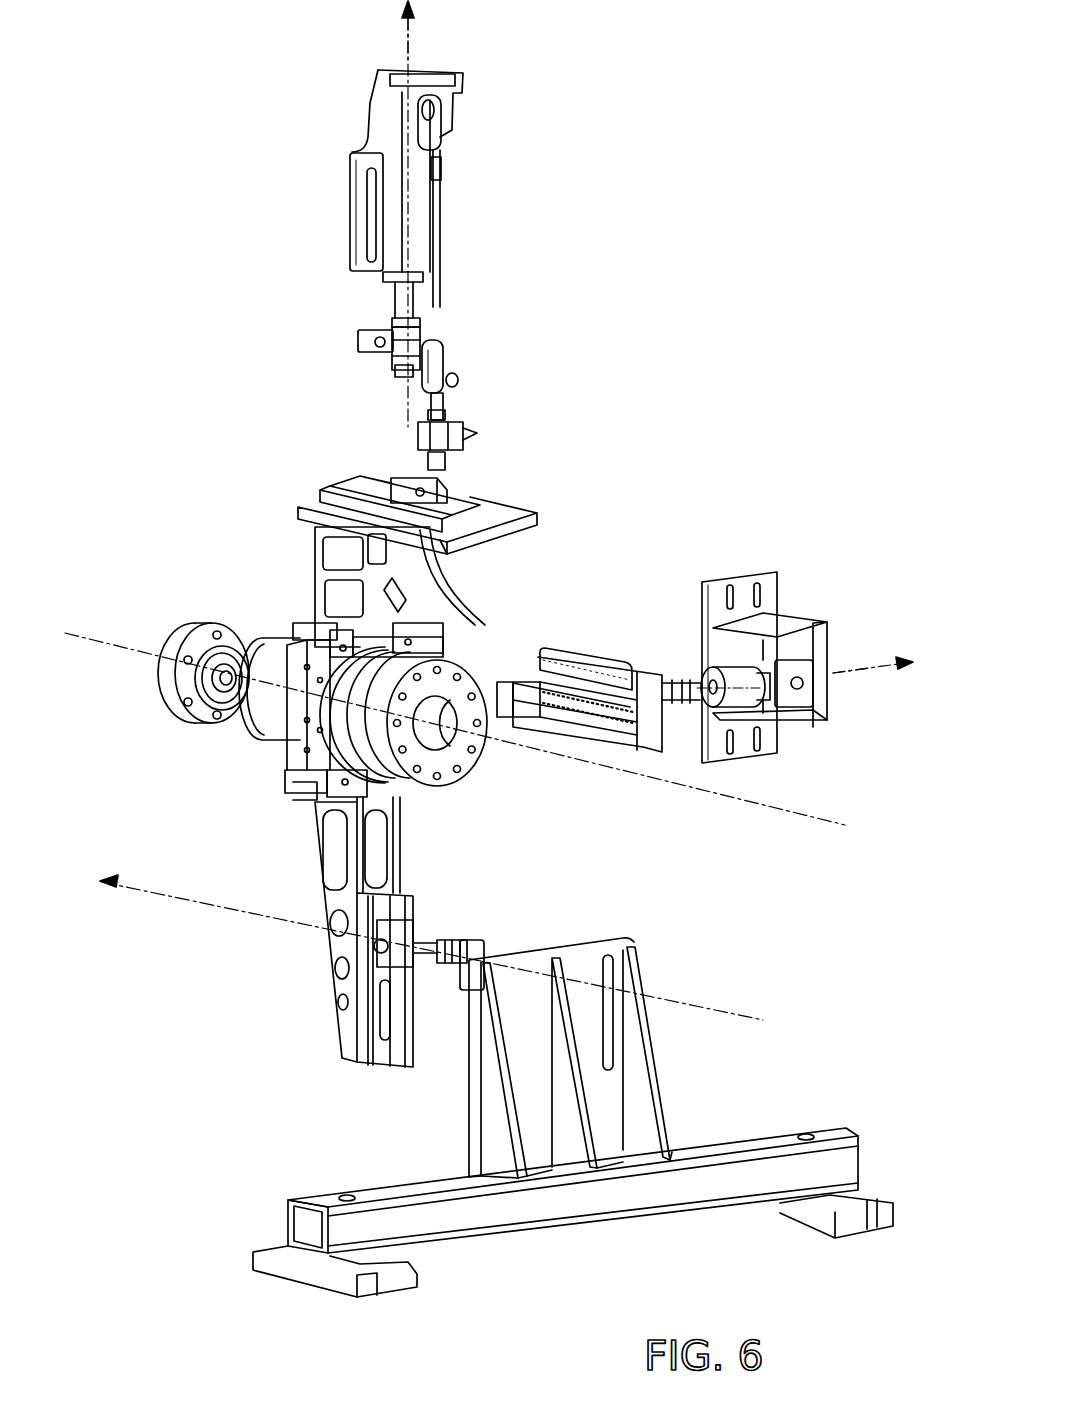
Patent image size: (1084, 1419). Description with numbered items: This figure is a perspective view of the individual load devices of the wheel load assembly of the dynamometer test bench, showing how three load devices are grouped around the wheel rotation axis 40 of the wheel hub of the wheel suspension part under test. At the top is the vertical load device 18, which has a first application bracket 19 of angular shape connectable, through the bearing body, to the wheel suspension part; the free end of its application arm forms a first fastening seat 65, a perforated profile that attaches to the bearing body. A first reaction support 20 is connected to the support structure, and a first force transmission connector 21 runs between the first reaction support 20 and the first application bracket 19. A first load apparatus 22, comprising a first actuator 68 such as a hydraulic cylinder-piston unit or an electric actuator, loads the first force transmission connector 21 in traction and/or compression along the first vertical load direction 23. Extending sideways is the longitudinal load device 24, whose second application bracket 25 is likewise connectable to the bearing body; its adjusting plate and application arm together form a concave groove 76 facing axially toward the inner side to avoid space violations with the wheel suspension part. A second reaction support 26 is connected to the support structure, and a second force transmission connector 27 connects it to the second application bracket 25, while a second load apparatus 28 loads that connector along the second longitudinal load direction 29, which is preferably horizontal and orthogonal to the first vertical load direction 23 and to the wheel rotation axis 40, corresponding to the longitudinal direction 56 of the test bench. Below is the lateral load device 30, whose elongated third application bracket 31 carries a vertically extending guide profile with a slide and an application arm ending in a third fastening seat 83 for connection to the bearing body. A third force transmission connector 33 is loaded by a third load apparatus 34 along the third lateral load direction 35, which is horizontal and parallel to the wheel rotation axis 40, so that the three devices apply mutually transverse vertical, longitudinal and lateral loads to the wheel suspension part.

The vertical load device 18 is at (328, 241).
The first application bracket 19 is at (313, 537).
The first reaction support 20 is at (357, 342).
The first force transmission connector 21 is at (440, 220).
The first load apparatus 22 is at (420, 190).
The first actuator 68 is at (429, 122).
The first vertical load direction 23 is at (412, 43).
The longitudinal load device 24 is at (670, 578).
The second application bracket 25 is at (497, 656).
The concave groove 76 is at (573, 643).
The second reaction support 26 is at (782, 573).
The second force transmission connector 27 is at (718, 667).
The second load apparatus 28 is at (680, 707).
The longitudinal direction 56 is at (855, 665).
The second longitudinal load direction 29 is at (851, 670).
The lateral load device 30 is at (303, 1007).
The third application bracket 31 is at (317, 897).
The third force transmission connector 33 is at (443, 965).
The third load apparatus 34 is at (440, 940).
The third lateral load direction 35 is at (691, 1007).
The wheel rotation axis 40 is at (118, 650).
The first fastening seat 65 is at (305, 623).
The third fastening seat 83 is at (310, 782).